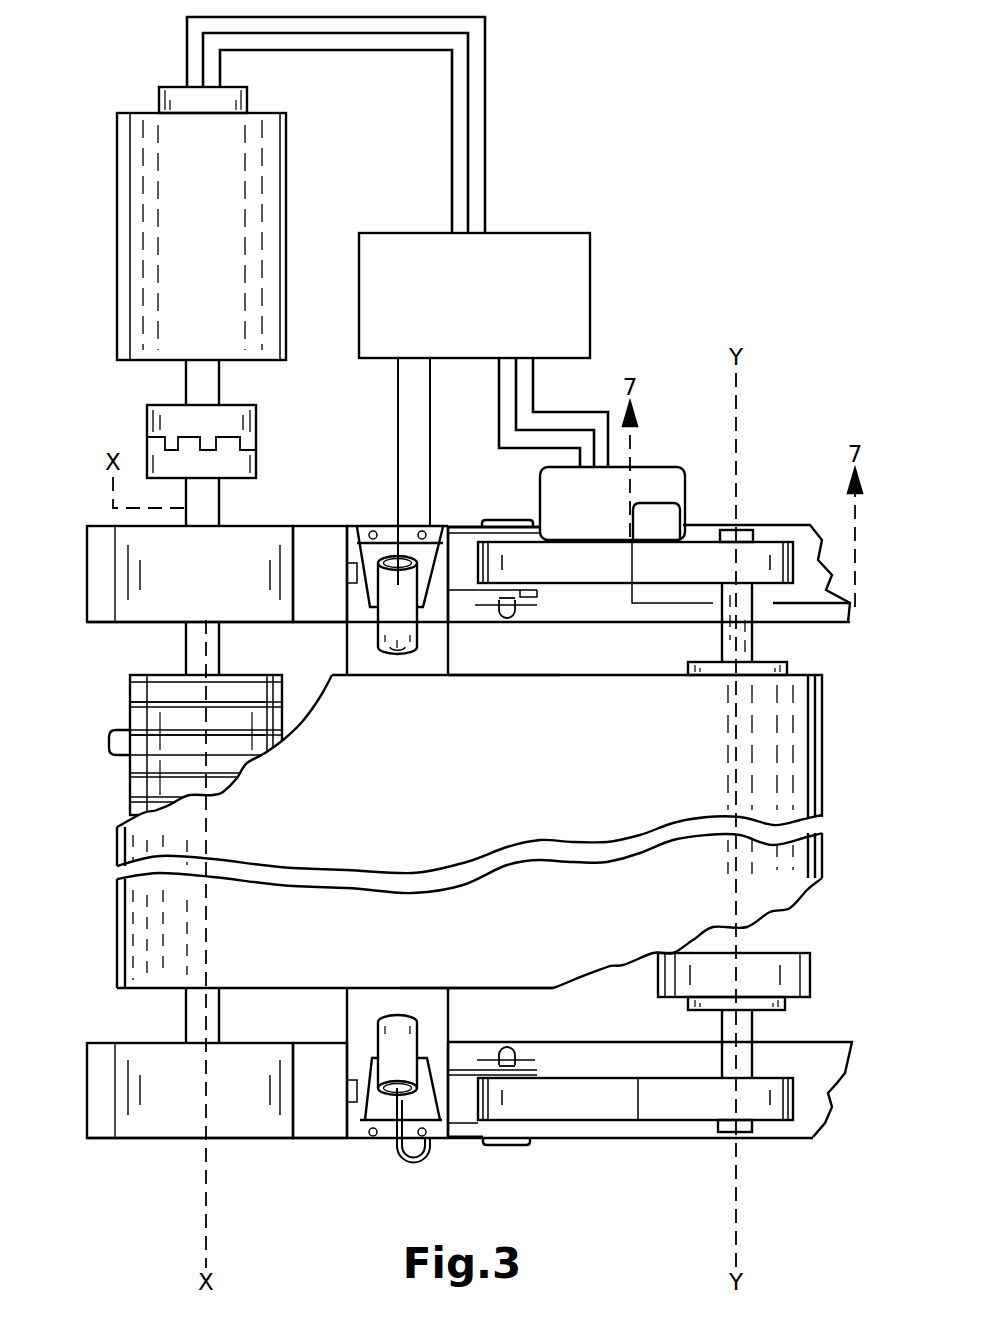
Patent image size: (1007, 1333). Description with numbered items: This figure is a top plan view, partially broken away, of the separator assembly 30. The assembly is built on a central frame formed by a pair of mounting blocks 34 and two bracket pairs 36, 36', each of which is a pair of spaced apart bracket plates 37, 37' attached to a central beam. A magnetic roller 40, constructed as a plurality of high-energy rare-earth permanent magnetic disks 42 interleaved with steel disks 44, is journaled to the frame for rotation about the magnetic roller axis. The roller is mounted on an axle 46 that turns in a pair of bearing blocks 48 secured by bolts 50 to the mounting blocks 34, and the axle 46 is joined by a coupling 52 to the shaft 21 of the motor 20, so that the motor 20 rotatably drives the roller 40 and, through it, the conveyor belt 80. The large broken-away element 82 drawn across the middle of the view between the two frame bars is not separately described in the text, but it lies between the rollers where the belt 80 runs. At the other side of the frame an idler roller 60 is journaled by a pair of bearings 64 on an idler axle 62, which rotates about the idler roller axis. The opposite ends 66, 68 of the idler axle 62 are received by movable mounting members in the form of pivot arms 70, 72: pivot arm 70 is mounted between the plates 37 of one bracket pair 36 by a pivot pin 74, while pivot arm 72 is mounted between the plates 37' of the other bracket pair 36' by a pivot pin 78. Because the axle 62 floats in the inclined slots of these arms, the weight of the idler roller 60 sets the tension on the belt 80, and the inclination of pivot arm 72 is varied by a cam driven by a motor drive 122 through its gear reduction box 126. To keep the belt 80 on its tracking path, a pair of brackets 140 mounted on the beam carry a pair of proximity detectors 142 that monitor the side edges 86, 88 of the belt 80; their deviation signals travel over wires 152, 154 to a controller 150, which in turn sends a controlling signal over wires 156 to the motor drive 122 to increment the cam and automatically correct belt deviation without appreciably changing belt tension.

The motor 20 is at (191, 254).
The shaft 21 is at (195, 378).
The separator assembly 30 is at (638, 246).
The mounting blocks 34 is at (315, 538).
The bracket pair 36 is at (532, 1113).
The bracket pair 36' is at (487, 532).
The bracket plates 37 is at (507, 1136).
The bracket plates 37' is at (497, 597).
The magnetic roller 40 is at (150, 680).
The permanent magnetic disks 42 is at (142, 713).
The steel disks 44 is at (109, 743).
The axle 46 is at (193, 633).
The bearing blocks 48 is at (128, 548).
The bolts 50 is at (360, 527).
The coupling 52 is at (153, 426).
The idler roller 60 is at (772, 948).
The idler axle 62 is at (735, 1035).
The bearings 64 is at (765, 662).
The first end 66 is at (733, 1071).
The end 68 is at (750, 530).
The pivot arm 70 is at (655, 1108).
The pivot arm 72 is at (673, 553).
The pivot pin 74 is at (503, 1147).
The pivot pin 78 is at (520, 520).
The conveyor belt 80 is at (803, 675).
The roller 82 is at (504, 782).
The side edge 86 is at (485, 990).
The side edge 88 is at (558, 675).
The motor drive 122 is at (560, 512).
The gear reduction box 126 is at (650, 505).
The brackets 140 is at (385, 527).
The detectors 142 is at (397, 648).
The controller 150 is at (512, 238).
The wires 152 is at (395, 380).
The wires 154 is at (433, 392).
The wires 156 is at (572, 408).